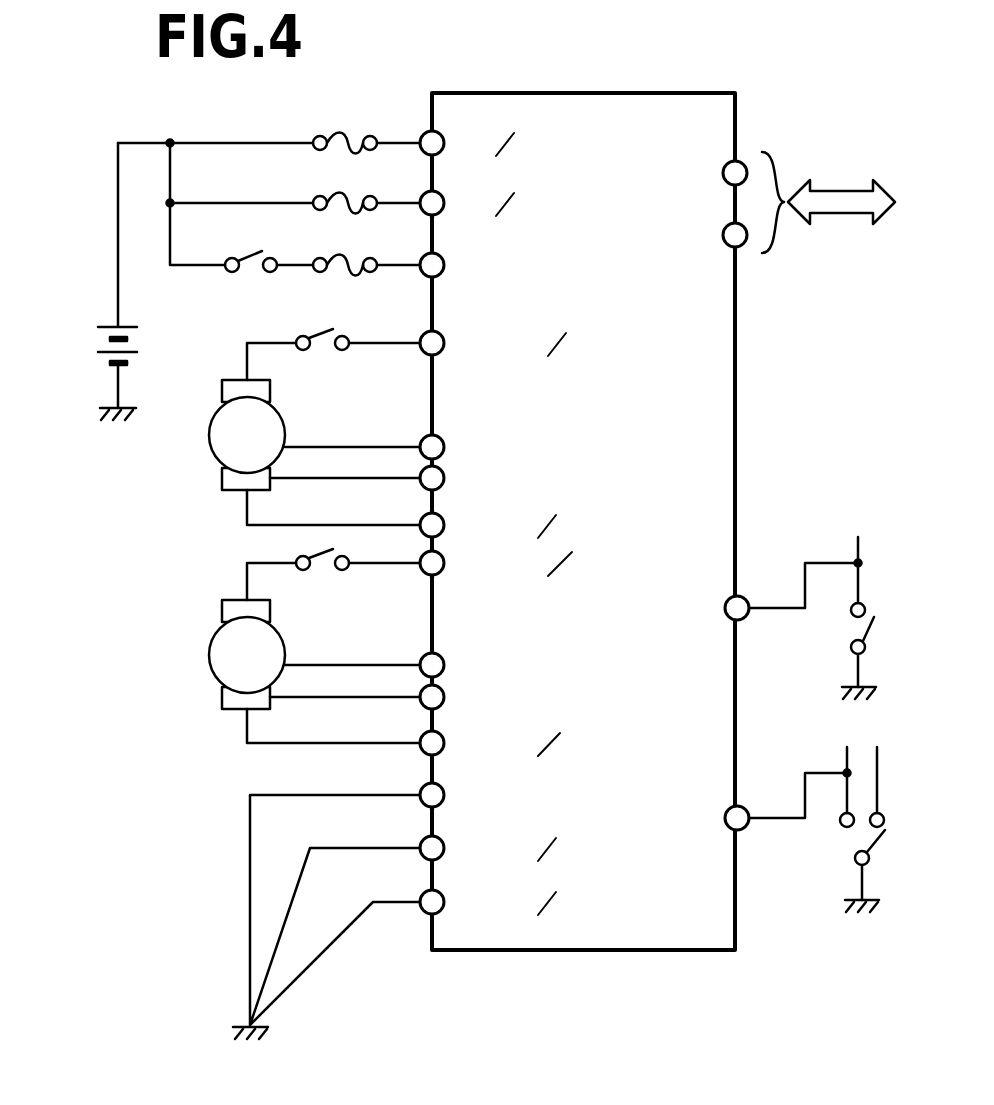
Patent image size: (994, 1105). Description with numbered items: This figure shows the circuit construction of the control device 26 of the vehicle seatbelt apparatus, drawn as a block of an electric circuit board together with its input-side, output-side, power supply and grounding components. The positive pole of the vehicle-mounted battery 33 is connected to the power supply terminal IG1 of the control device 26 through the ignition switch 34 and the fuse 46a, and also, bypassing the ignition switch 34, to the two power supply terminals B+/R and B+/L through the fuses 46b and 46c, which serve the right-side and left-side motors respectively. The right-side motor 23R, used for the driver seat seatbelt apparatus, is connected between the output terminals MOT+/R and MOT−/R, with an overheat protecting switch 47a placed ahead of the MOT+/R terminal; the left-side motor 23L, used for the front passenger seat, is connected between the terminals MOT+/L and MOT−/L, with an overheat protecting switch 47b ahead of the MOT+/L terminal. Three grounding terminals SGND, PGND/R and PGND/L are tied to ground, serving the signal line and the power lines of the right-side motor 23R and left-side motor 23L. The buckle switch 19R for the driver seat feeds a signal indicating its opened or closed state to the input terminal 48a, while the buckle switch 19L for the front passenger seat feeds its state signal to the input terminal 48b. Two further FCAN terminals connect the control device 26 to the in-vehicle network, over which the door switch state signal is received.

The control device 26 is at (555, 93).
The vehicle-mounted battery 33 is at (100, 342).
The ignition switch 34 is at (248, 270).
The fuse 46a is at (345, 272).
The fuse 46b is at (345, 136).
The fuse 46c is at (348, 210).
The overheat protecting switch 47a is at (322, 348).
The overheat protecting switch 47b is at (322, 568).
The right-side motor 23R is at (208, 437).
The left-side motor 23L is at (208, 657).
The input terminal 48a is at (725, 607).
The input terminal 48b is at (725, 817).
The buckle switch 19R is at (855, 627).
The buckle switch 19L is at (860, 840).